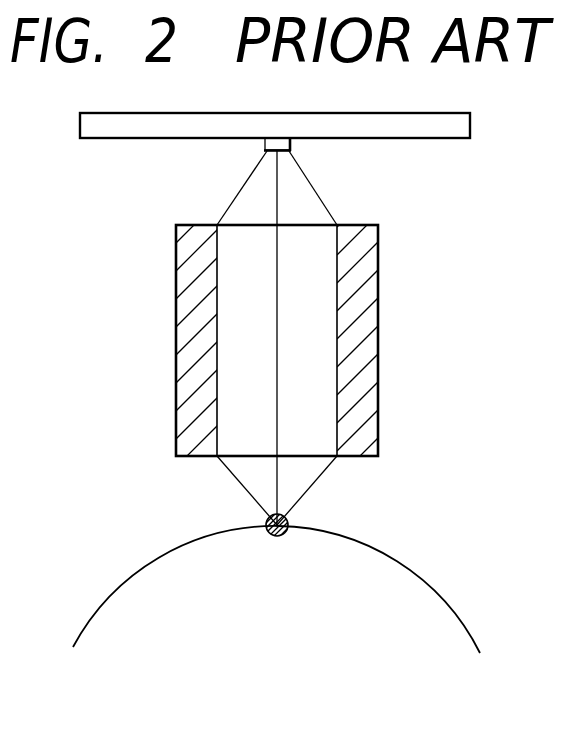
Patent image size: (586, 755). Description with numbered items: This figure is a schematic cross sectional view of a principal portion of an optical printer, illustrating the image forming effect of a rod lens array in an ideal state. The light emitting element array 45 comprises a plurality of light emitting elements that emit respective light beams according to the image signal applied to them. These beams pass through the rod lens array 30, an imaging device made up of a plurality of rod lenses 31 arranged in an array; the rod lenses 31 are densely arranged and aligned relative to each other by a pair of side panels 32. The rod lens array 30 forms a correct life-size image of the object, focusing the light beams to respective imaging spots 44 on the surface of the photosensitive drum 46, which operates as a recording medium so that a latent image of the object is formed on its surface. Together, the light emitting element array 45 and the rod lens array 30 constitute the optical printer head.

The rod lens array 30 is at (285, 317).
The rod lenses 31 is at (226, 289).
The side panels 32 is at (182, 358).
The imaging spots 44 is at (288, 531).
The light emitting element array 45 is at (264, 143).
The photosensitive drum 46 is at (128, 600).